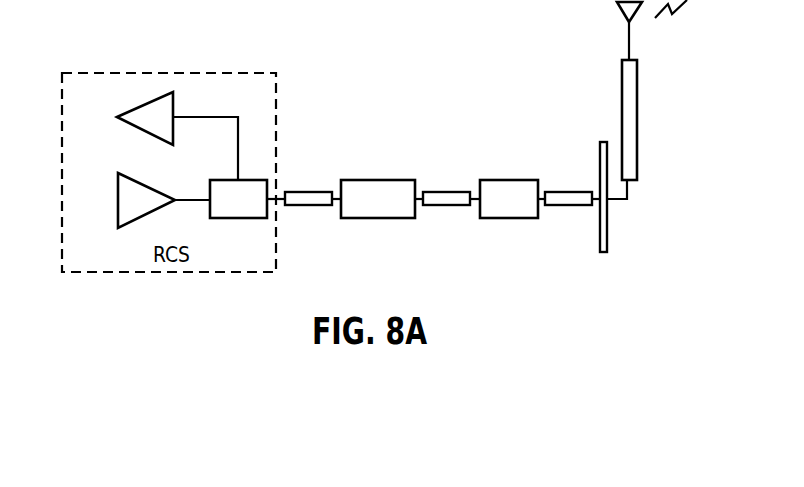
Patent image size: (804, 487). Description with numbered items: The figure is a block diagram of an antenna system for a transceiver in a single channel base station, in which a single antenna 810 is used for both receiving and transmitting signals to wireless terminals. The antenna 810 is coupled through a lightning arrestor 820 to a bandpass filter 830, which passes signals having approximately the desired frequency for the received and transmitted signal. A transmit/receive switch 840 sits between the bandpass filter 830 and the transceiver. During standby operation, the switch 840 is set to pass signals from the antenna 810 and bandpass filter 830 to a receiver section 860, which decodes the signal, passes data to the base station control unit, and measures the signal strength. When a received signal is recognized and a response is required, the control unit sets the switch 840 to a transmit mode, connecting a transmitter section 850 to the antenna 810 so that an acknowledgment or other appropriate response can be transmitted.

The antenna 810 is at (616, 6).
The lightning arrestor 820 is at (528, 180).
The bandpass filter 830 is at (403, 180).
The transmit/receive switch 840 is at (245, 218).
The transmitter section 850 is at (117, 181).
The receiver section 860 is at (177, 101).